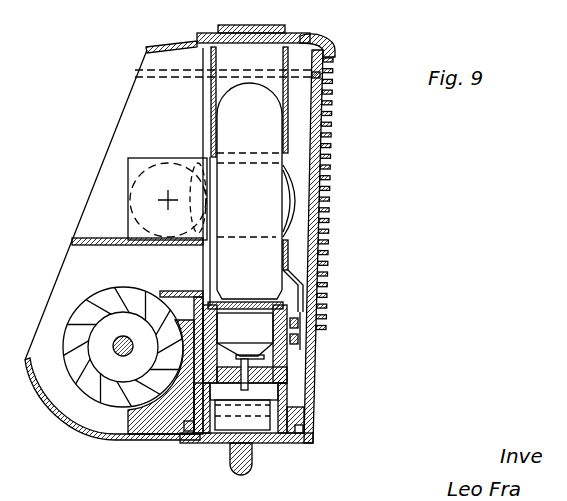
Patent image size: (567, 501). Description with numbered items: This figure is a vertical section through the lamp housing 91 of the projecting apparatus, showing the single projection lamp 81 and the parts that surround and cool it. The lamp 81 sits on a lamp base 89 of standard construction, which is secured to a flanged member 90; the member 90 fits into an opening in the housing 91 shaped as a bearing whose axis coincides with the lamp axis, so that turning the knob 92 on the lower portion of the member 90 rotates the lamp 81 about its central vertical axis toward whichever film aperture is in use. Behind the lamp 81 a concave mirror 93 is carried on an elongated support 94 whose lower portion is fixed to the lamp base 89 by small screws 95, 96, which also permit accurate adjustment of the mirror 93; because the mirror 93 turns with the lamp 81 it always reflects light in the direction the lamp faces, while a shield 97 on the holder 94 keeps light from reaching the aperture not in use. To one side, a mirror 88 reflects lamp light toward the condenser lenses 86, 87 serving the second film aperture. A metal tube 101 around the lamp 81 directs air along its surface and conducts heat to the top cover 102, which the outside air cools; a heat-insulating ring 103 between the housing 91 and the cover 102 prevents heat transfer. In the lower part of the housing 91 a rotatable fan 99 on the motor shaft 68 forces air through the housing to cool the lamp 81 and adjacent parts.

The shaft 68 is at (123, 356).
The projection lamp 81 is at (277, 96).
The lens 86 is at (196, 172).
The lens 87 is at (193, 233).
The mirror 88 is at (139, 158).
The lamp base 89 is at (288, 372).
The flanged member 90 is at (308, 415).
The lamp housing 91 is at (325, 238).
The knob 92 is at (253, 463).
The concave mirror 93 is at (298, 202).
The elongated support 94 is at (295, 263).
The screw 95 is at (323, 317).
The screw 96 is at (301, 341).
The shield 97 is at (235, 237).
The rotatable fan 99 is at (116, 393).
The metal tube 101 is at (212, 97).
The top cover 102 is at (327, 42).
The ring 103 is at (322, 76).